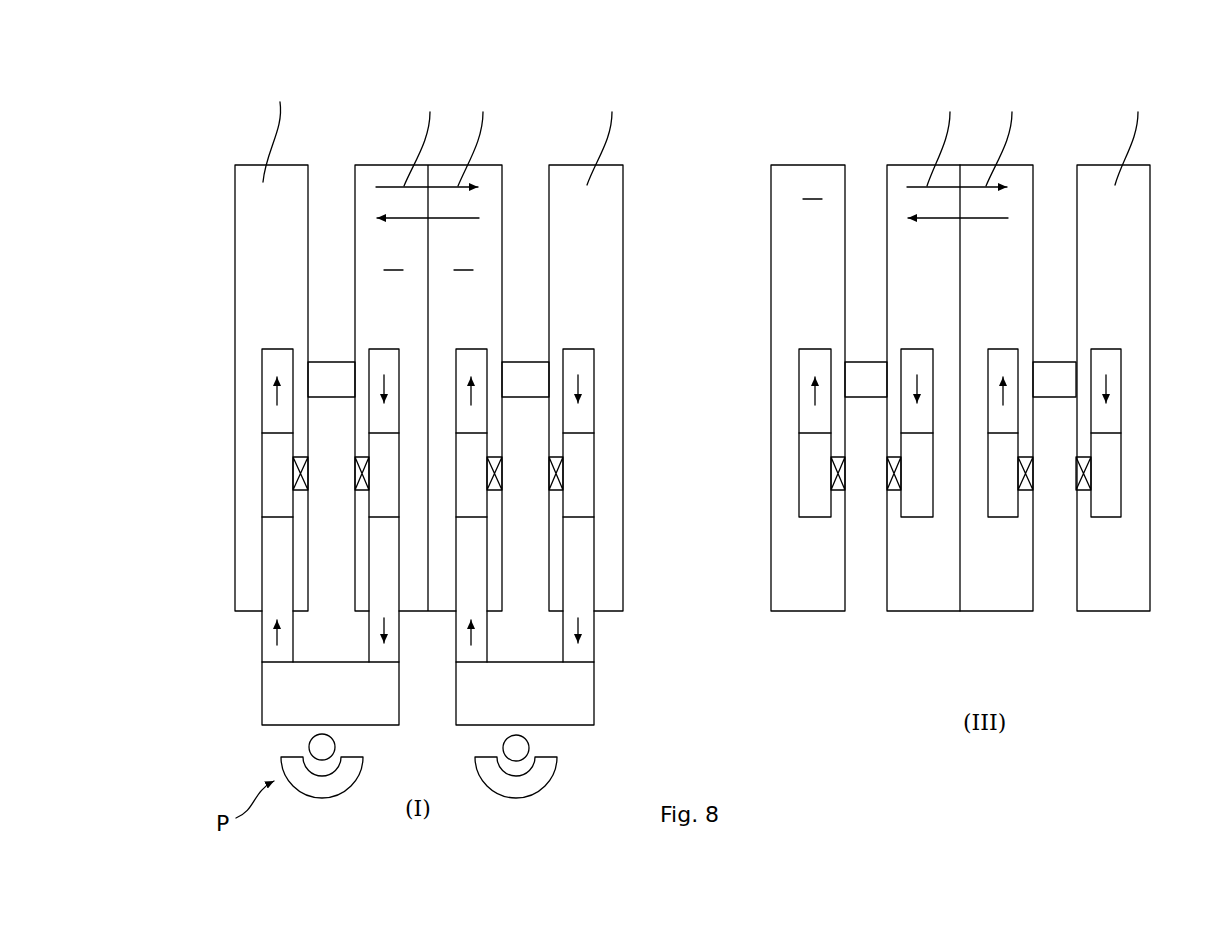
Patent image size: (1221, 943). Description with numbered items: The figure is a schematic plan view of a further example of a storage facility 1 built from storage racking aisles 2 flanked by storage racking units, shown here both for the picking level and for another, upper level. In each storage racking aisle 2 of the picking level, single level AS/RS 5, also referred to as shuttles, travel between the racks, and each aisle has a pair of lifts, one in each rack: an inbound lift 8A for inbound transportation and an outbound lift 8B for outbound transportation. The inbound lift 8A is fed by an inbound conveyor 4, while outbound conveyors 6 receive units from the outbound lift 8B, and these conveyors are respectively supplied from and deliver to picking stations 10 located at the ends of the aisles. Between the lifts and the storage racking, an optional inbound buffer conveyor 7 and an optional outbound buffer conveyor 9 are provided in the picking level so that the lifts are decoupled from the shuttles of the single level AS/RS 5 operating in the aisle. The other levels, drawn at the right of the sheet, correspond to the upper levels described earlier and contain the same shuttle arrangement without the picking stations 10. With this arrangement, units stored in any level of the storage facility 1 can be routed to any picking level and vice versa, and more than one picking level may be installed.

The storage facility 1 is at (226, 109).
The storage racking aisle 2 is at (334, 158).
The inbound conveyor 4 is at (270, 653).
The single level AS/RS 5 is at (692, 379).
The outbound conveyor 6 is at (377, 653).
The inbound buffer conveyor 7 is at (273, 363).
The inbound lift 8A is at (273, 493).
The outbound lift 8B is at (392, 450).
The outbound buffer conveyor 9 is at (378, 352).
The picking station 10 is at (273, 710).